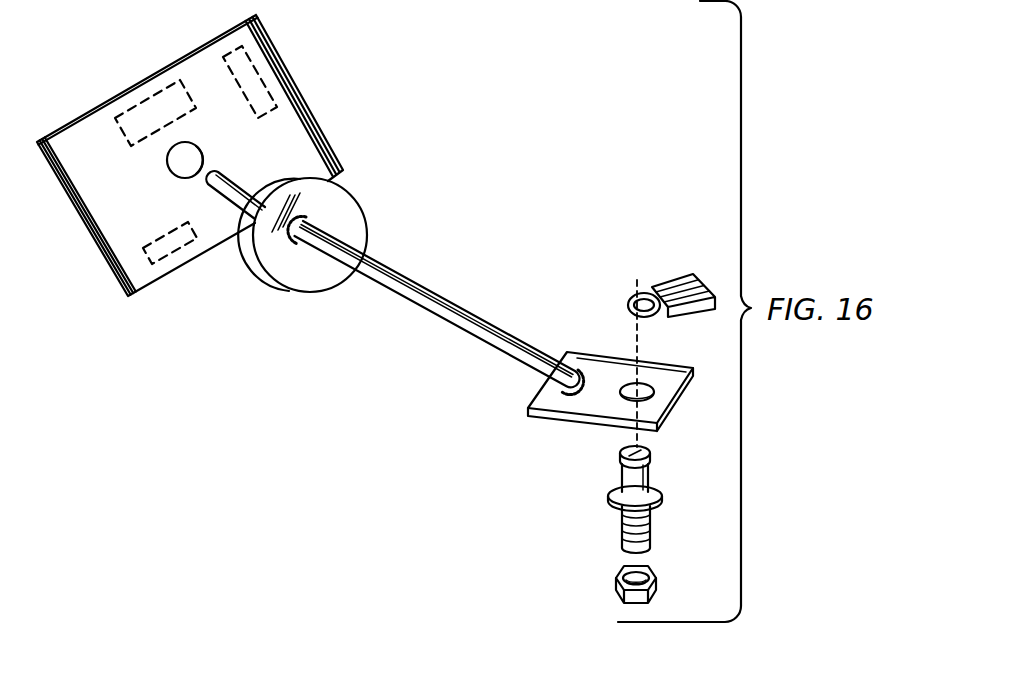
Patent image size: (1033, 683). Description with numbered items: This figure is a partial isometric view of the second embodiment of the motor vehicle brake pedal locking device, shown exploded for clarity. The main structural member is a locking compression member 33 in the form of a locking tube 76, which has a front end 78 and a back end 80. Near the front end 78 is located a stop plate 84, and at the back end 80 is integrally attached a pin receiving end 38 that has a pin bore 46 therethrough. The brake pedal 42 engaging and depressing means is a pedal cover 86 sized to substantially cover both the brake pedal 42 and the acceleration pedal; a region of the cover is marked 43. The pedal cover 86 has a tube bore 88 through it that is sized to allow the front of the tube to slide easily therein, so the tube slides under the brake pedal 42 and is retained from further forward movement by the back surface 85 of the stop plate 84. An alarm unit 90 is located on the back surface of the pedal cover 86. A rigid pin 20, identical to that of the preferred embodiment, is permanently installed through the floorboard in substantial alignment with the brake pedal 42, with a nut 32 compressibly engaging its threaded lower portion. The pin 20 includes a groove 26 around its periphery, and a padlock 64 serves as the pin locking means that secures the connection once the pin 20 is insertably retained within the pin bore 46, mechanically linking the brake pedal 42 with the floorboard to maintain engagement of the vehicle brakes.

The brake pedal 42 is at (230, 177).
The connector region 43 is at (251, 67).
The tube bore 88 is at (205, 150).
The pedal cover 86 is at (340, 149).
The stop plate 84 is at (308, 266).
The back surface 85 is at (256, 262).
The front end 78 is at (313, 248).
The alarm unit 90 is at (173, 256).
The locking compression member 33 is at (394, 320).
The locking tube 76 is at (515, 273).
The back end 80 is at (530, 380).
The pin receiving end 38 is at (630, 375).
The pin bore 46 is at (650, 396).
The padlock 64 is at (671, 261).
The groove 26 is at (620, 470).
The pin 20 is at (617, 511).
The nut 32 is at (620, 592).